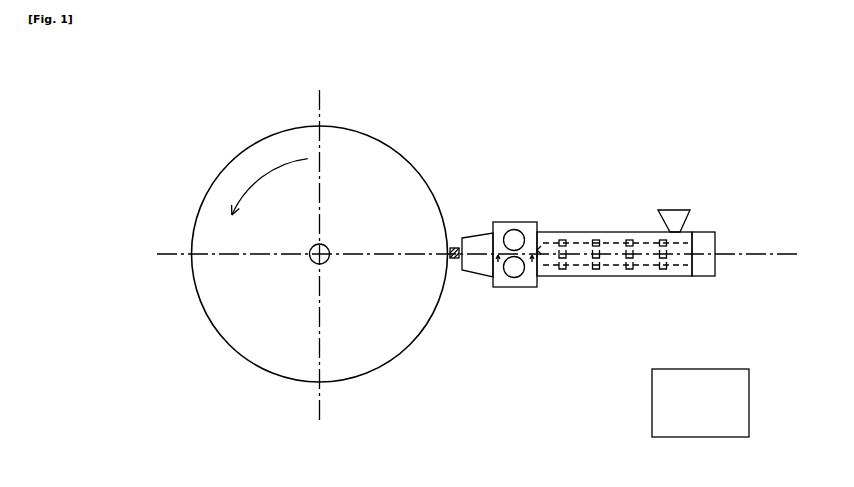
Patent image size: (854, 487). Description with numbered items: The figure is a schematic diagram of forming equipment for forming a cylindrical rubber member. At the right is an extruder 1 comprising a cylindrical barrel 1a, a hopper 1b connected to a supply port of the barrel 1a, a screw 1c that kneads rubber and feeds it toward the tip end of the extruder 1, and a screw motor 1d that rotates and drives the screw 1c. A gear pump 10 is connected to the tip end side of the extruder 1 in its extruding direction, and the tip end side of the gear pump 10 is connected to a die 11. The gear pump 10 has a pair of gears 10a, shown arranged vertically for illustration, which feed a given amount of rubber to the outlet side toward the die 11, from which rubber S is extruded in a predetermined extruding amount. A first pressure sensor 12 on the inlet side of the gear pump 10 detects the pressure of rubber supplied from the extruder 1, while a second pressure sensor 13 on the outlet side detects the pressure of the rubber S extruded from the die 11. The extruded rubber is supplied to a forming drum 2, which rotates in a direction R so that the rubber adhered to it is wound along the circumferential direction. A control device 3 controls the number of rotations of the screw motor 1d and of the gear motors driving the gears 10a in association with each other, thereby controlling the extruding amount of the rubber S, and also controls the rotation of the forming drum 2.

The extruder 1 is at (651, 246).
The cylindrical barrel 1a is at (657, 277).
The hopper 1b is at (673, 210).
The screw 1c is at (616, 270).
The screw motor 1d is at (704, 277).
The forming drum 2 is at (247, 151).
The control device 3 is at (710, 369).
The gear pump 10 is at (520, 261).
The pair of gears 10a is at (512, 256).
The die 11 is at (477, 273).
The first pressure sensor 12 is at (538, 278).
The second pressure sensor 13 is at (494, 288).
The rubber S is at (455, 247).
The direction R is at (307, 158).